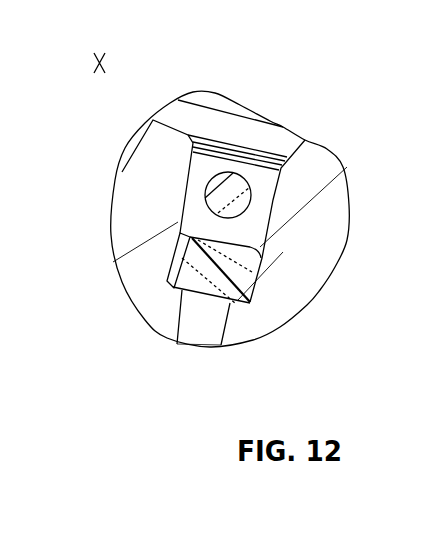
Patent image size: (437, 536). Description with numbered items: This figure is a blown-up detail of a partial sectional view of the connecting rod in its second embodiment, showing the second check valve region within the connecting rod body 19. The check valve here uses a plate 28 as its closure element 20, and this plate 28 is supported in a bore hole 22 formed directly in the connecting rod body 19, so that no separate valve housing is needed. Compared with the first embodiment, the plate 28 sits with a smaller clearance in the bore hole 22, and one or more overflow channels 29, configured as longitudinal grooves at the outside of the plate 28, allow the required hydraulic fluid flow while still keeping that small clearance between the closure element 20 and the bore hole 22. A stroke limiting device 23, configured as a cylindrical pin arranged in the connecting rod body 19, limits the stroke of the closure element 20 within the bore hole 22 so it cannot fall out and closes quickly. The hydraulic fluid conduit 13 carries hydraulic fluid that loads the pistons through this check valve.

The hydraulic fluid conduit 13 is at (205, 327).
The connecting rod body 19 is at (145, 203).
The closure element 20 is at (340, 327).
The bore hole 22 is at (392, 228).
The stroke limiting device 23 is at (356, 163).
The plate 28 is at (347, 280).
The overflow channels 29 is at (170, 274).